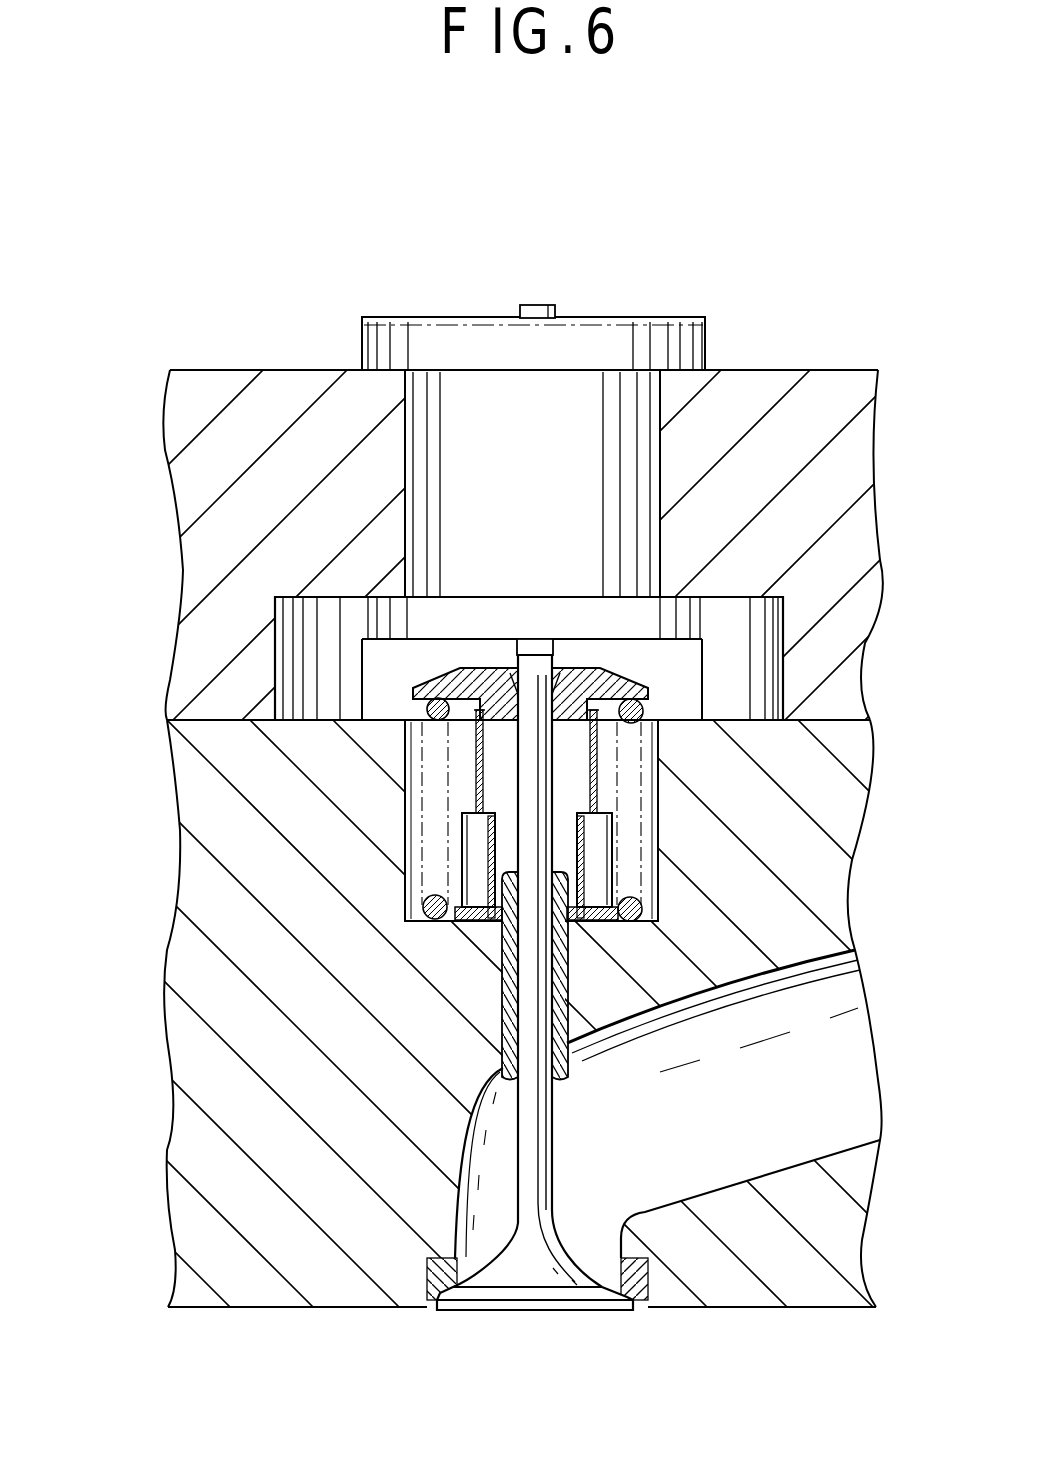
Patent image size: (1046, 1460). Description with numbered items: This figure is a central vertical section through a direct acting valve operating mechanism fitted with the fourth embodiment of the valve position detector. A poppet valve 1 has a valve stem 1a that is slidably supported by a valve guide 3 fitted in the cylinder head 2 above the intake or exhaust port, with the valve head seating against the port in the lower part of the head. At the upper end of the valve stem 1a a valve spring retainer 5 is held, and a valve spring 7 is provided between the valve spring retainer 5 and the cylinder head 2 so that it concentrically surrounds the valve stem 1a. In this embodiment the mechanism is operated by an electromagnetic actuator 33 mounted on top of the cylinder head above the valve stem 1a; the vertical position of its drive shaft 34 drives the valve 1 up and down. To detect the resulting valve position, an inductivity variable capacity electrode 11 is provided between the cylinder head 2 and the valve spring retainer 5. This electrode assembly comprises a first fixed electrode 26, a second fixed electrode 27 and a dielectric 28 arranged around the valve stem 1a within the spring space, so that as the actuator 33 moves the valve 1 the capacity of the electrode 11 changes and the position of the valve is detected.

The poppet valve 1 is at (560, 982).
The valve stem 1a is at (555, 1174).
The cylinder head 2 is at (332, 1292).
The valve guide 3 is at (500, 1012).
The valve spring retainer 5 is at (447, 690).
The valve spring 7 is at (430, 718).
The inductivity variable capacity electrode 11 is at (336, 886).
The first fixed electrode 26 is at (462, 868).
The second fixed electrode 27 is at (359, 938).
The dielectric 28 is at (470, 778).
The electromagnetic actuator 33 is at (661, 316).
The drive shaft 34 is at (542, 305).